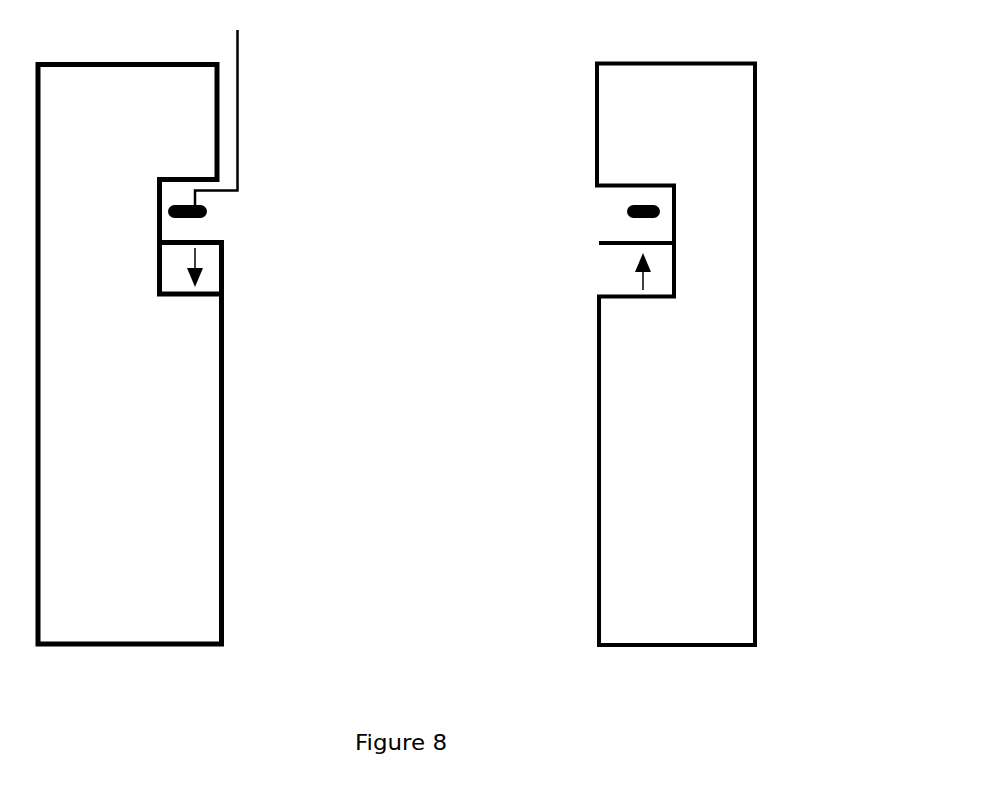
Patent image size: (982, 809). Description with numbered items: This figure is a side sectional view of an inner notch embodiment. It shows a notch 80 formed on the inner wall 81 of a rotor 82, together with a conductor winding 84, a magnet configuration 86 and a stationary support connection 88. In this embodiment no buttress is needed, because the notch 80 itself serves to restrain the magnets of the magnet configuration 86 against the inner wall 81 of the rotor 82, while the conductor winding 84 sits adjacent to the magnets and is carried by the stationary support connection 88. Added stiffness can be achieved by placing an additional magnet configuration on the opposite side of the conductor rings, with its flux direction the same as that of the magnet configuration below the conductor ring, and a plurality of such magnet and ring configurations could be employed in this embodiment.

The notch 80 is at (157, 225).
The inner wall 81 is at (225, 505).
The rotor 82 is at (757, 382).
The conductor winding 84 is at (627, 206).
The magnet configuration 86 is at (617, 283).
The stationary support connection 88 is at (238, 157).